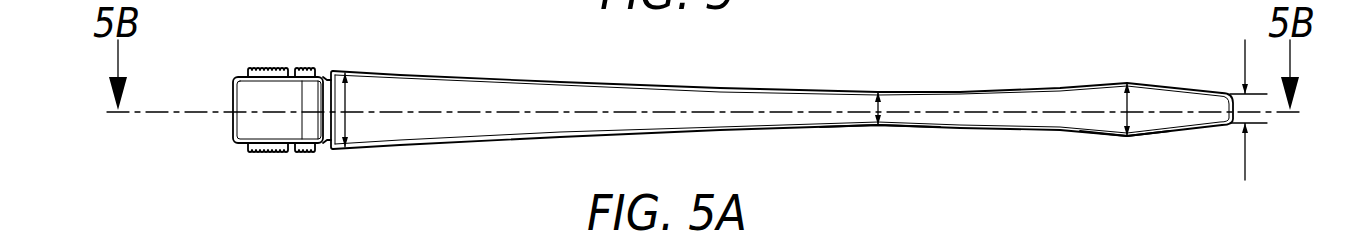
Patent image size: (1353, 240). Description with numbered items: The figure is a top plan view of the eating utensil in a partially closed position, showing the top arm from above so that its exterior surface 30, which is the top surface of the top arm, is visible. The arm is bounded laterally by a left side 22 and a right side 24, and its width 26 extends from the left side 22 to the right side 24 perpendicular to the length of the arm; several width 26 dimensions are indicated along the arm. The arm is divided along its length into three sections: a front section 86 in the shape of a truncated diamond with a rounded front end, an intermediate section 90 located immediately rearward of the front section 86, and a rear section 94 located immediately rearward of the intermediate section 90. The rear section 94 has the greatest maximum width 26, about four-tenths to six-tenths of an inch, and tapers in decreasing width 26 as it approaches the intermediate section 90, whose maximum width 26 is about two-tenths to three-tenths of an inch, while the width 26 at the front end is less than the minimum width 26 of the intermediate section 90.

The left side 22 is at (416, 74).
The right side 24 is at (416, 146).
The width 26 is at (348, 99).
The exterior surface 30 is at (554, 98).
The front section 86 is at (1120, 148).
The intermediate section 90 is at (867, 148).
The rear section 94 is at (368, 168).